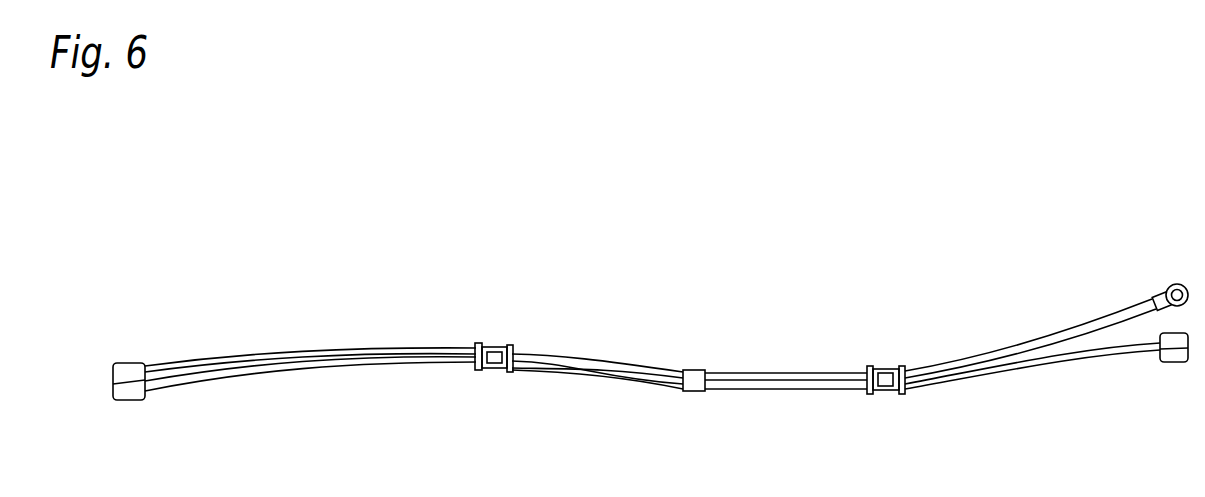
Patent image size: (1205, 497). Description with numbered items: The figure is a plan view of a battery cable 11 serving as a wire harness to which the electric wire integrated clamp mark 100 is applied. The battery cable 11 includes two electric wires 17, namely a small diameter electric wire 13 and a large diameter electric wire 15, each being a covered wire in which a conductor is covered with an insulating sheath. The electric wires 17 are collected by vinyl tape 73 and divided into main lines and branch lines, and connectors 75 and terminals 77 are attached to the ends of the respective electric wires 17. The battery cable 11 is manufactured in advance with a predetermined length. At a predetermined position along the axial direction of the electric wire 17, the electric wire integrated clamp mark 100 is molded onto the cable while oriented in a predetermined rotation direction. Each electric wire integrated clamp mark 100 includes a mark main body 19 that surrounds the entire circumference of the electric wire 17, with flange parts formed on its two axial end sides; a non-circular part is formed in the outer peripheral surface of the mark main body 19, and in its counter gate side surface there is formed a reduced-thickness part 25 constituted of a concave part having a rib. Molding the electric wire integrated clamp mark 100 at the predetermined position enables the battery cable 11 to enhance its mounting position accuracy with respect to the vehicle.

The battery cable 11 is at (507, 218).
The small diameter electric wire 13 is at (755, 372).
The large diameter electric wire 15 is at (375, 362).
The electric wire 17 is at (618, 357).
The mark main body 19 is at (497, 347).
The reduced-thickness part 25 is at (494, 363).
The vinyl tape 73 is at (692, 391).
The connector 75 is at (128, 363).
The terminal 77 is at (1171, 284).
The electric wire integrated clamp mark 100 is at (480, 330).